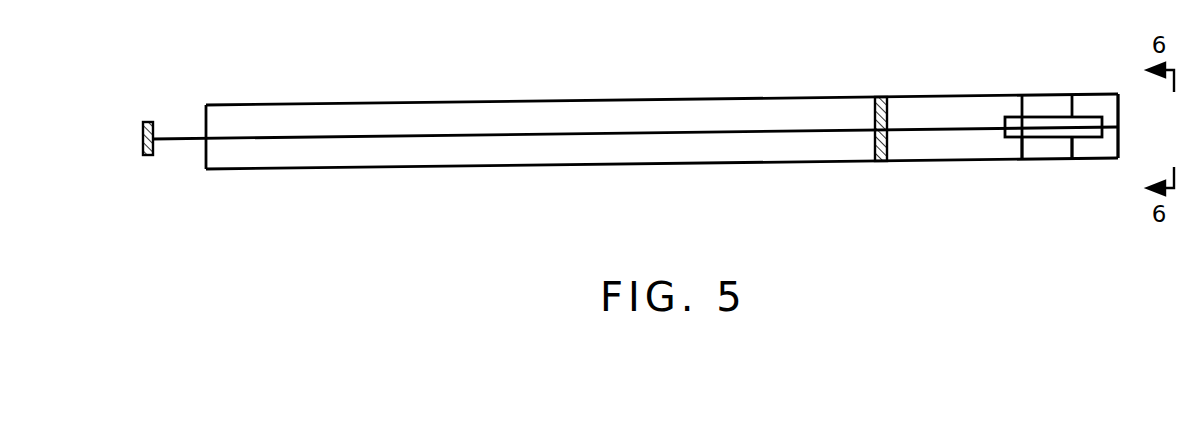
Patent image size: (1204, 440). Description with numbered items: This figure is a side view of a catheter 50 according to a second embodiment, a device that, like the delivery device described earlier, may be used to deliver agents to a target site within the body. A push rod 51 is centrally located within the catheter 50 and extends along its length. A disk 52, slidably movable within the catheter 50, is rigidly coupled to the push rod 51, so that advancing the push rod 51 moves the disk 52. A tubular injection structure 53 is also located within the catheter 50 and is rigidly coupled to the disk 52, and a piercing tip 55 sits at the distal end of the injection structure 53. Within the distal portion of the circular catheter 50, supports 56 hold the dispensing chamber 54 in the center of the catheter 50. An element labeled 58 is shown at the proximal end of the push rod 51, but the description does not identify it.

The catheter 50 is at (480, 166).
The push rod 51 is at (713, 133).
The disk 52 is at (883, 161).
The tubular injection structure 53 is at (948, 131).
The dispensing chamber 54 is at (1047, 117).
The piercing tip 55 is at (1118, 127).
The supports 56 is at (1072, 143).
The stopper 58 is at (149, 157).